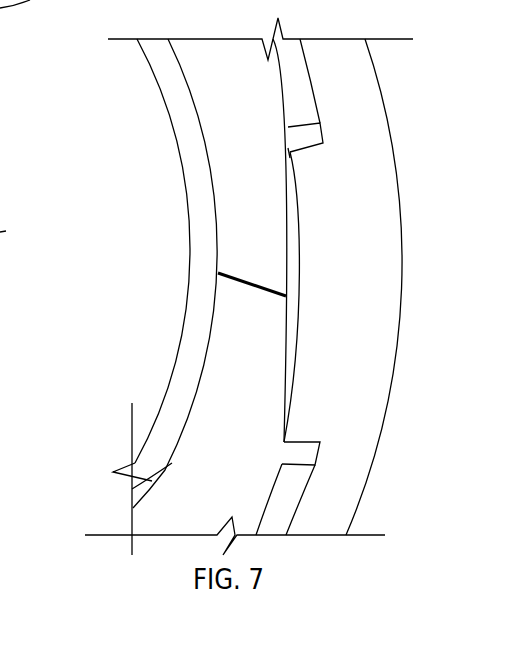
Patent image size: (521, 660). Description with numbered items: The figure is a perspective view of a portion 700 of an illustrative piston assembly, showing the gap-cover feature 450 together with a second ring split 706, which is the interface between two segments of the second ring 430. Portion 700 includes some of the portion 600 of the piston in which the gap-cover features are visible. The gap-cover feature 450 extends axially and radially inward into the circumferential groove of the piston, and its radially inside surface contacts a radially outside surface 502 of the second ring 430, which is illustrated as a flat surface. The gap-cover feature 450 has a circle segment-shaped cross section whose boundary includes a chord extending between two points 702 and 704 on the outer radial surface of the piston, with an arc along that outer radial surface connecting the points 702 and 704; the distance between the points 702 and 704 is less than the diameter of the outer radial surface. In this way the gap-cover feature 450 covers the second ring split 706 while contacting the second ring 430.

The portion 700 is at (375, 18).
The second ring 430 is at (254, 88).
The portion 600 is at (175, 259).
The gap-cover feature 450 is at (318, 253).
The radially outside surface 502 is at (325, 131).
The point 702 is at (280, 153).
The point 704 is at (276, 434).
The second ring split 706 is at (243, 296).